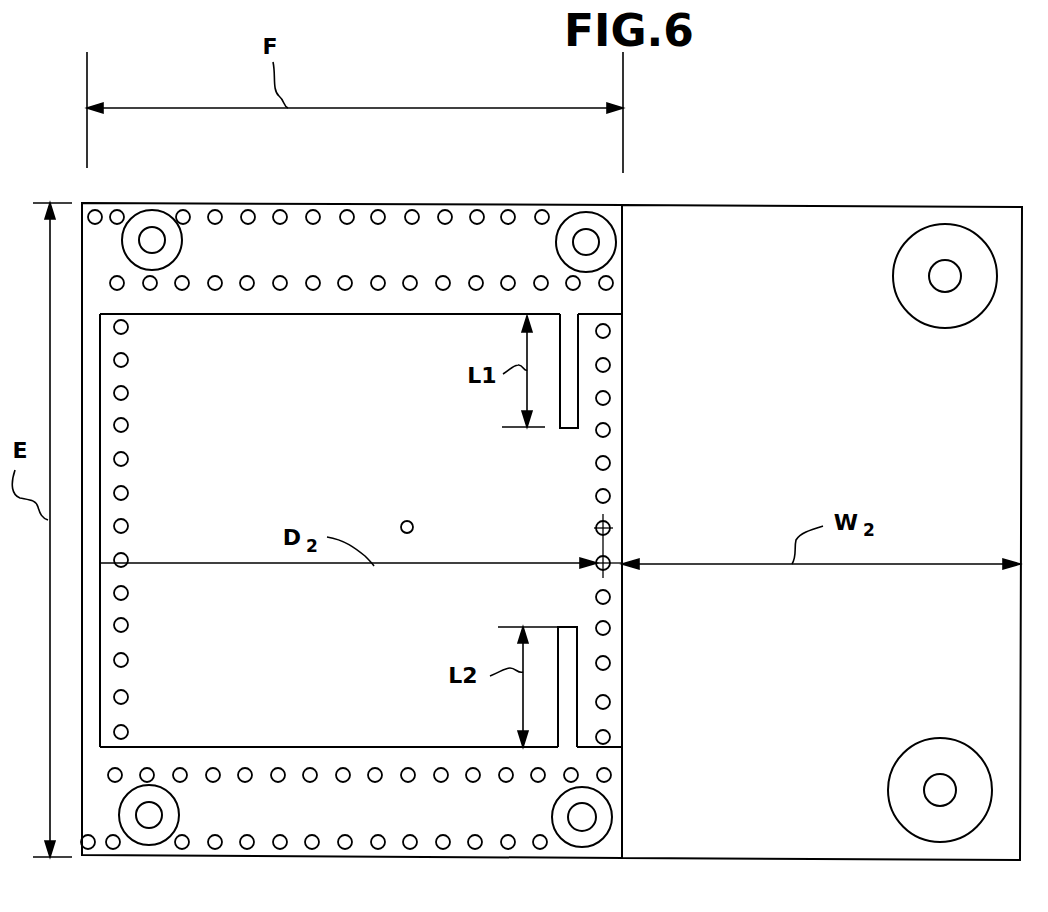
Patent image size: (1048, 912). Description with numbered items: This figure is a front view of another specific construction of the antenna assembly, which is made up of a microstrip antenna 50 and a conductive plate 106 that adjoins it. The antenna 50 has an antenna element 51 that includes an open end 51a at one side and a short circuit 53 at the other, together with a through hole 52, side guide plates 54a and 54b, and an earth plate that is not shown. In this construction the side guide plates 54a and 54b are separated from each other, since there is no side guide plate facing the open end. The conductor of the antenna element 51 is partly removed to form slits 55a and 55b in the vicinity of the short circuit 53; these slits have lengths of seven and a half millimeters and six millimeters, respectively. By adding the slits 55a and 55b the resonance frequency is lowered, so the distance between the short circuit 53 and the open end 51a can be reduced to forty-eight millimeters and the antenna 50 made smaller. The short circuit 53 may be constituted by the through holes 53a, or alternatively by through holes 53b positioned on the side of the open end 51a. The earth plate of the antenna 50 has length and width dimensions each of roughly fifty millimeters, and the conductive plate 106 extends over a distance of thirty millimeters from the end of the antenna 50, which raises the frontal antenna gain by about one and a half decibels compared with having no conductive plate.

The microstrip antenna 50 is at (412, 205).
The antenna element 51 is at (361, 530).
The open end 51a is at (100, 450).
The through hole 52 is at (407, 521).
The short circuit 53 is at (617, 533).
The through holes 53a is at (600, 437).
The through holes 53b is at (126, 390).
The side guide plate 54a is at (198, 215).
The side guide plate 54b is at (270, 857).
The slit 55a is at (553, 398).
The slit 55b is at (552, 663).
The conductive plate 106 is at (700, 207).